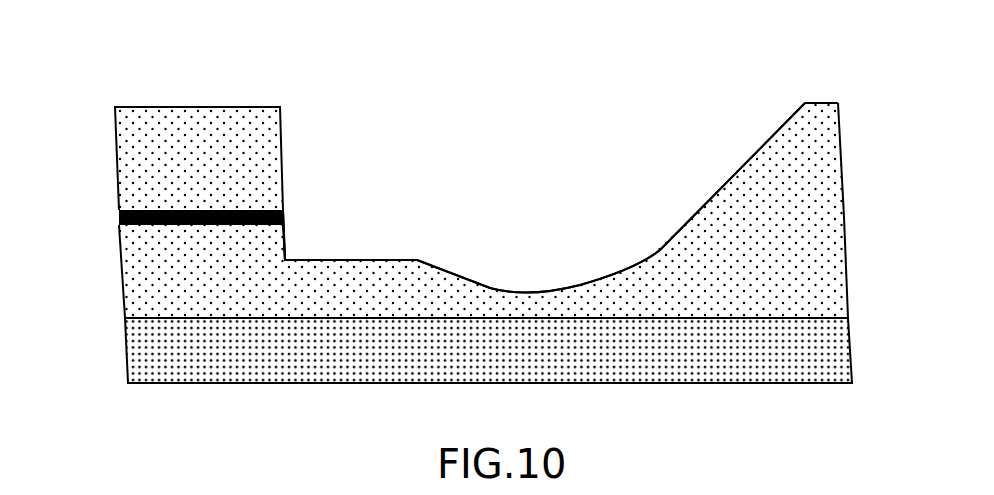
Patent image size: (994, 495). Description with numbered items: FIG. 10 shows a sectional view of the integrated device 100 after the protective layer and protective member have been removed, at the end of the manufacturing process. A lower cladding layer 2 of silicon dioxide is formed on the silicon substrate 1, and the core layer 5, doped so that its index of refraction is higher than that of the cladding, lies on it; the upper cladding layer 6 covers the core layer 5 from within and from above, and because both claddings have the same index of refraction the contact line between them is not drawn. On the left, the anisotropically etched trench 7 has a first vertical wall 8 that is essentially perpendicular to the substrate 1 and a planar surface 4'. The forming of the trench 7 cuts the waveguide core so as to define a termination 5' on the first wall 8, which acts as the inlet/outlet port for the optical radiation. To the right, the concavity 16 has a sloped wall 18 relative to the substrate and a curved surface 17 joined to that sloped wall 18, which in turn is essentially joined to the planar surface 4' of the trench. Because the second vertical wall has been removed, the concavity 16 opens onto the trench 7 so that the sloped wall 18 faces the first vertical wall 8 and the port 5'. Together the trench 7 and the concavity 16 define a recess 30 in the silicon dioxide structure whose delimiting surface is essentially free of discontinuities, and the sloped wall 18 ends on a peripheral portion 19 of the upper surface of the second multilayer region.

The silicon substrate 1 is at (141, 352).
The lower cladding layer 2 is at (135, 272).
The core layer 5 is at (171, 215).
The termination 5' is at (331, 178).
The upper cladding layer 6 is at (136, 153).
The trench 7 is at (355, 202).
The first vertical wall 8 is at (289, 149).
The planar surface 4' is at (353, 225).
The concavity 16 is at (557, 202).
The curved surface 17 is at (486, 290).
The sloped wall 18 is at (714, 191).
The peripheral portion 19 is at (815, 103).
The recess 30 is at (498, 138).
The integrated device 100 is at (181, 99).